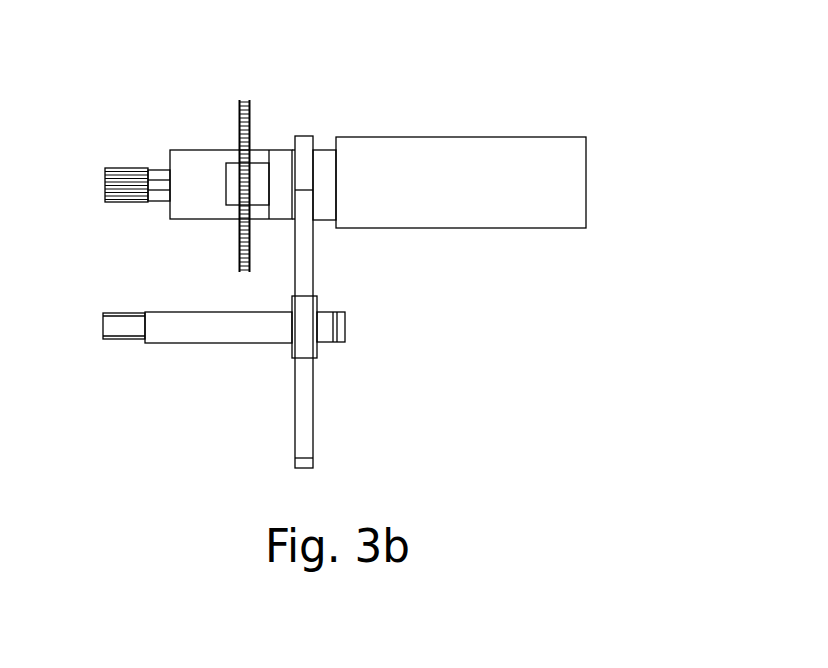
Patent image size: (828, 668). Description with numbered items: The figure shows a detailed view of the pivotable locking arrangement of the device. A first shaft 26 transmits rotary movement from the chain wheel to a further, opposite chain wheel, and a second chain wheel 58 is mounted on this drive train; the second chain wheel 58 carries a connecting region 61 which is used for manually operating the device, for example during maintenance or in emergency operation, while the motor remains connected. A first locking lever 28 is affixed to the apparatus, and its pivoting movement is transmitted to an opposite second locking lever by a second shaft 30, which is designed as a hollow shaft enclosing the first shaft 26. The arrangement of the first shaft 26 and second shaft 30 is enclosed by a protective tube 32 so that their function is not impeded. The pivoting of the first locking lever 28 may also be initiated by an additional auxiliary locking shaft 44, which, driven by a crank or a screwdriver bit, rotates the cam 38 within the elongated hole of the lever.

The first shaft 26 is at (253, 173).
The first locking lever 28 is at (303, 407).
The second shaft 30 is at (322, 160).
The protective tube 32 is at (453, 155).
The cam 38 is at (317, 310).
The auxiliary locking shaft 44 is at (125, 327).
The second chain wheel 58 is at (243, 100).
The connecting region 61 is at (127, 180).